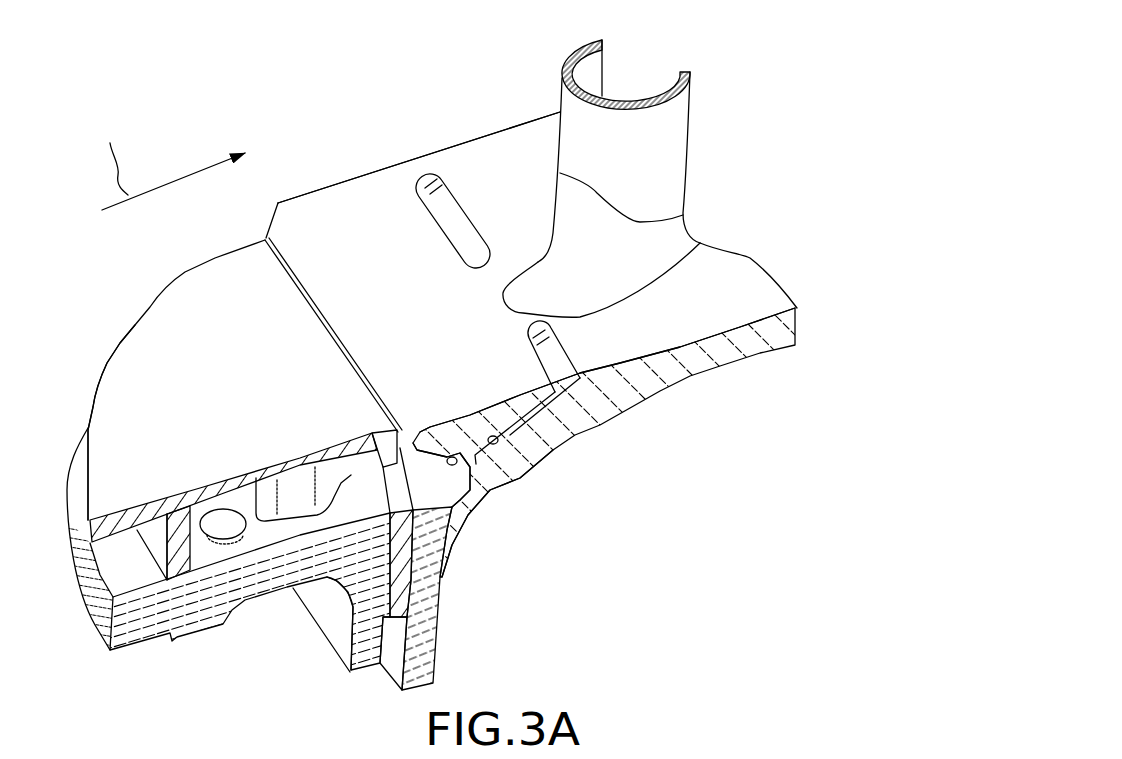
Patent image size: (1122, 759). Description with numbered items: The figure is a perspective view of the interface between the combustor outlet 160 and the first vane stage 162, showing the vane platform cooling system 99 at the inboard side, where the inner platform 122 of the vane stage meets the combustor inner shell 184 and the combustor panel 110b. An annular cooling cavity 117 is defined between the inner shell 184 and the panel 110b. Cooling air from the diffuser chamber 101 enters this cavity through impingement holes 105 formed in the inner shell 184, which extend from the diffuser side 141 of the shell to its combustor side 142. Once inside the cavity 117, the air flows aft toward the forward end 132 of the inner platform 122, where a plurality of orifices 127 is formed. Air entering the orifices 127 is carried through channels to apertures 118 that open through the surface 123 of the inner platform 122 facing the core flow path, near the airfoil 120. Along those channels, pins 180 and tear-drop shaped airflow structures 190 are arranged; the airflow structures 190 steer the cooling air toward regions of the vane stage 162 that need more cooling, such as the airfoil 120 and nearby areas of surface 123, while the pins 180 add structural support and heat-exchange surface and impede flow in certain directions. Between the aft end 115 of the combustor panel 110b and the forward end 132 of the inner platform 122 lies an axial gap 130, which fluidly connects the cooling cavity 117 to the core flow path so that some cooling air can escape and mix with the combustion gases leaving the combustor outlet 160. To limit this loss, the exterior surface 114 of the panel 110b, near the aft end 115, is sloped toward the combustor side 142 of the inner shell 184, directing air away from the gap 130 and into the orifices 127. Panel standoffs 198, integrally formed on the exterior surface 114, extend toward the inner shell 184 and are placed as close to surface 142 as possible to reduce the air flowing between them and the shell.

The vane platform cooling system 99 is at (187, 90).
The first vane stage 162 is at (372, 136).
The inner platform 122 is at (466, 172).
The surface of inner platform 123 is at (459, 306).
The aft end of combustor panel 115 is at (283, 239).
The gap 130 is at (341, 336).
The apertures 118 is at (448, 214).
The airfoil 120 is at (684, 108).
The combustor outlet 160 is at (116, 295).
The combustor panel 110b is at (130, 361).
The combustor side of inner shell 142 is at (140, 581).
The inner shell 184 is at (138, 627).
The impingement holes 105 is at (223, 516).
The panel standoffs 198 is at (297, 483).
The annular cooling cavity 117 is at (205, 549).
The exterior surface of combustor panel 114 is at (347, 462).
The diffuser chamber 101 is at (224, 714).
The diffuser side of inner shell 141 is at (264, 597).
The orifices 127 is at (445, 472).
The forward end of inner platform 132 is at (433, 444).
The airflow structures 190 is at (540, 410).
The pins 180 is at (472, 460).